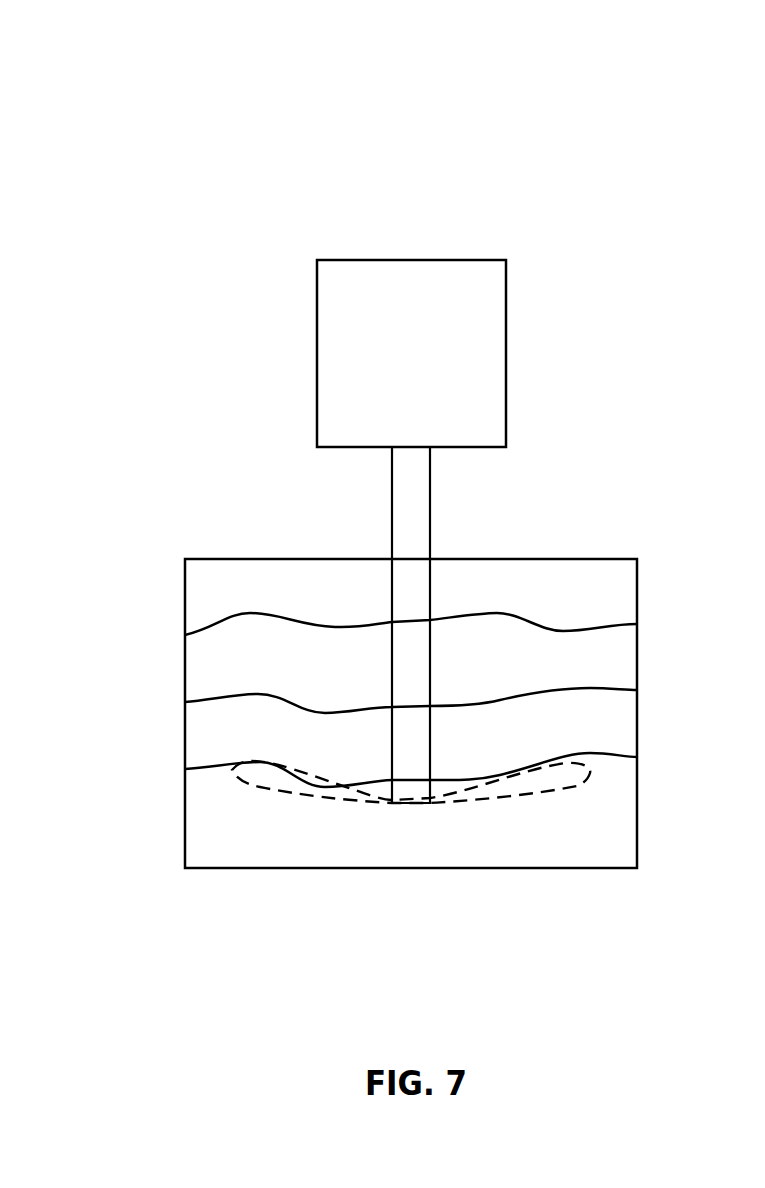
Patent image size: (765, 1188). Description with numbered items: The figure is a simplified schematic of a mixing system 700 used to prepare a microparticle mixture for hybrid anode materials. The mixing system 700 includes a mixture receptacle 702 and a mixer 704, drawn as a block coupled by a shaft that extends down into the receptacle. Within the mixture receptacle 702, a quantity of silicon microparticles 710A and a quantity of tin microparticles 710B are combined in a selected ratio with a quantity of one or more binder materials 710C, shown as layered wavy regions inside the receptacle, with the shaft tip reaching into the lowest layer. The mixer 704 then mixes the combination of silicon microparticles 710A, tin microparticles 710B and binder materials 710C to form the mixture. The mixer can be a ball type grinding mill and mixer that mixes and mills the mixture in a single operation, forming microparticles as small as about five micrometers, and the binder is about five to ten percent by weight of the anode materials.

The mixing system 700 is at (142, 72).
The mixture receptacle 702 is at (373, 267).
The mixer 704 is at (223, 572).
The silicon microparticles 710A is at (190, 836).
The tin microparticles 710B is at (190, 748).
The binder materials 710C is at (190, 685).